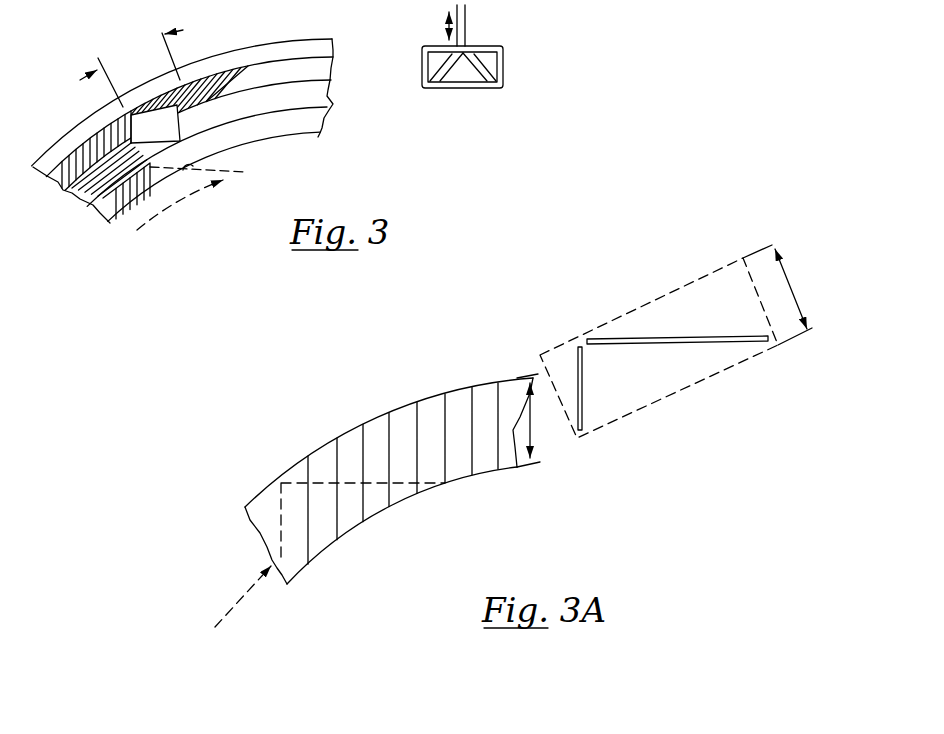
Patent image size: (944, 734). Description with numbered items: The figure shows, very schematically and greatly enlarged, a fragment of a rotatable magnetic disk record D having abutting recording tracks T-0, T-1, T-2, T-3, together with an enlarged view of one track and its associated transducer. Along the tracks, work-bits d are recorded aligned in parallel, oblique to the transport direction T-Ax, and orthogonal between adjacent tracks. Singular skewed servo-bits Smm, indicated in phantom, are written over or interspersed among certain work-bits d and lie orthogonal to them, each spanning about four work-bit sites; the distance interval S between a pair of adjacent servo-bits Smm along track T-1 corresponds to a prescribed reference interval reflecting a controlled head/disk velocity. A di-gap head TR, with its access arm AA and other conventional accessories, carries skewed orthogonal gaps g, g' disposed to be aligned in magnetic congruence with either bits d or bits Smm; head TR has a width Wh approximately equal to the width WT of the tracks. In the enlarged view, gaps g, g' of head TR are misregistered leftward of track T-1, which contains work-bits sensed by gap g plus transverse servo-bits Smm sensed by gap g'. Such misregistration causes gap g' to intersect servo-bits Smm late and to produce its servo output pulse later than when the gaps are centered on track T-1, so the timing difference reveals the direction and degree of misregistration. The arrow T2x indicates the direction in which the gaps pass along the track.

In FIG. 3, the interval S is at (131, 68).
In FIG. 3, the magnetic disk record D is at (238, 44).
In FIG. 3, the recording track T-0 is at (333, 40).
In FIG. 3, the recording track T-1 is at (333, 72).
In FIG. 3A, the recording track T-1 is at (258, 533).
In FIG. 3, the recording track T-2 is at (330, 103).
In FIG. 3, the recording track T-3 is at (330, 130).
In FIG. 3, the work-bits d is at (174, 143).
In FIG. 3A, the work-bits d is at (377, 429).
In FIG. 3, the servo-bits Smm is at (226, 173).
In FIG. 3A, the servo-bits Smm is at (298, 483).
In FIG. 3, the transport direction T-Ax is at (162, 220).
In FIG. 3, the access arm AA is at (466, 33).
In FIG. 3, the di-gap head TR is at (506, 66).
In FIG. 3A, the di-gap head TR is at (702, 400).
In FIG. 3, the transducer gap g is at (446, 85).
In FIG. 3A, the transducer gap g is at (595, 388).
In FIG. 3, the transducer gap g' is at (488, 85).
In FIG. 3A, the transducer gap g' is at (677, 326).
In FIG. 3A, the tread direction T2x is at (243, 606).
In FIG. 3A, the track width WT is at (531, 420).
In FIG. 3A, the head width Wh is at (777, 295).